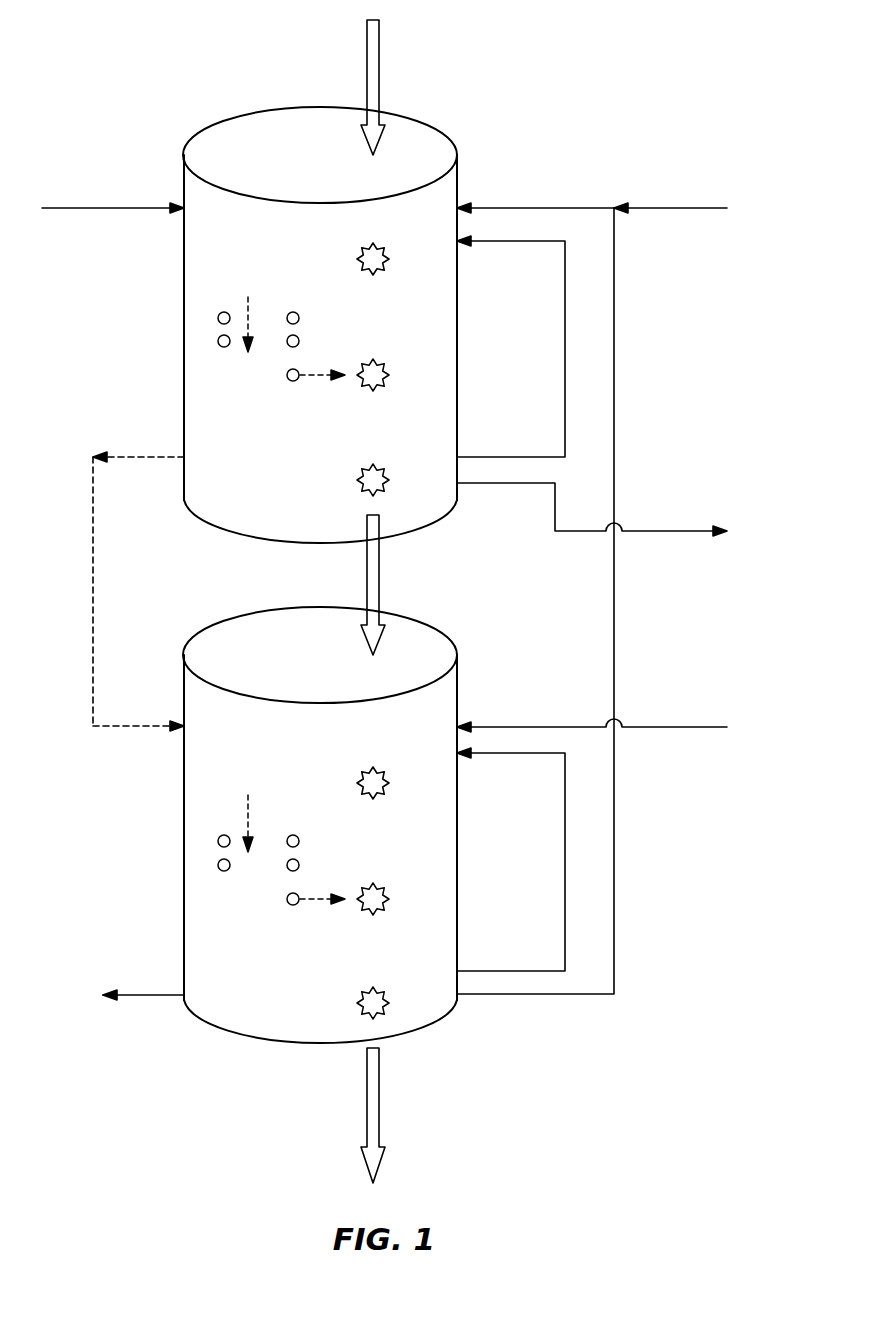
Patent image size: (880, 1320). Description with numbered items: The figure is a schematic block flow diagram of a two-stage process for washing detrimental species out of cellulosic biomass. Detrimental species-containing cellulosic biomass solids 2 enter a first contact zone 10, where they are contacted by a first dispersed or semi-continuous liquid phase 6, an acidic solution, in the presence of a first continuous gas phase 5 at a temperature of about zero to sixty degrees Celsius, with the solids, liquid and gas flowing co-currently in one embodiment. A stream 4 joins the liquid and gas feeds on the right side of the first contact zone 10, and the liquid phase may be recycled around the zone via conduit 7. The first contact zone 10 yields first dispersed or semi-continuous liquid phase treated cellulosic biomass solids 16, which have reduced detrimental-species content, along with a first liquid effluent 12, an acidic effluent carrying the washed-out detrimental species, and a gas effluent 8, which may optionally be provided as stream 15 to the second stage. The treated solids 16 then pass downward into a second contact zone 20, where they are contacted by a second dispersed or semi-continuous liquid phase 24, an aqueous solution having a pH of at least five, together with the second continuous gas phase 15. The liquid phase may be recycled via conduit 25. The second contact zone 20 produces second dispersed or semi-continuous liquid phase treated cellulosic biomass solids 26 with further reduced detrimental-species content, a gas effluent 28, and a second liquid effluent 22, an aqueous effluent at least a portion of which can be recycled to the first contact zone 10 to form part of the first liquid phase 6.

The detrimental species-containing cellulosic biomass solids 2 is at (380, 70).
The hydrogen feed stream 4 is at (671, 208).
The first continuous gas phase 5 is at (83, 208).
The first dispersed or semi-continuous liquid phase 6 is at (547, 208).
The conduit 7 is at (565, 352).
The gas effluent 8 is at (138, 457).
The first contact zone 10 is at (306, 246).
The first liquid effluent 12 is at (672, 531).
The second continuous gas phase 15 is at (140, 726).
The first dispersed or semi-continuous liquid phase treated cellulosic biomass solid 16 is at (380, 573).
The second contact zone 20 is at (306, 769).
The second liquid effluent 22 is at (614, 376).
The second dispersed or semi-continuous liquid phase 24 is at (685, 727).
The conduit 25 is at (565, 875).
The second dispersed or semi-continuous liquid phase treated cellulosic biomass soli 26 is at (380, 1115).
The gas effluent 28 is at (138, 995).